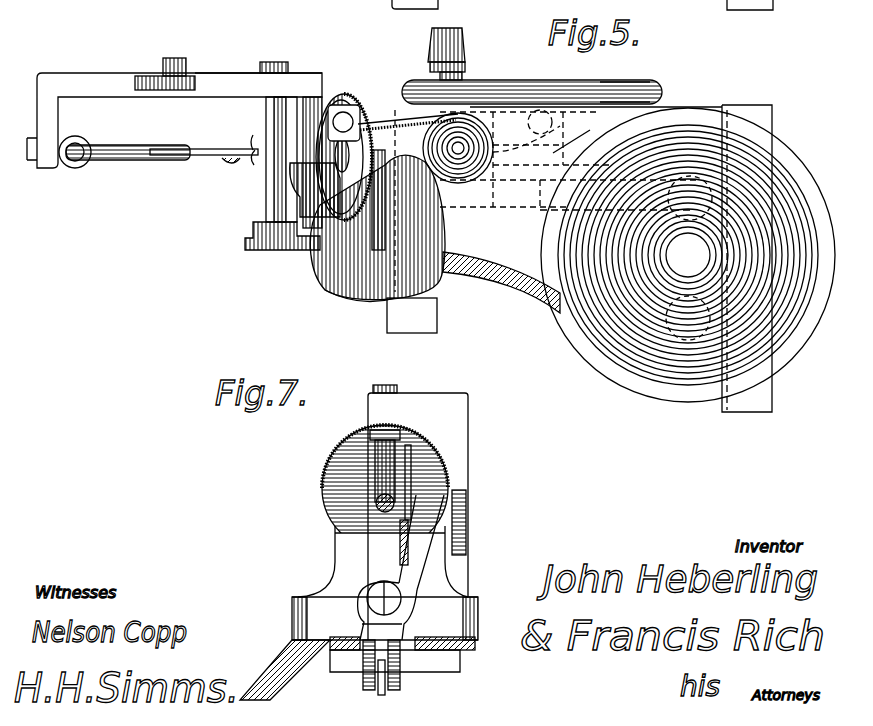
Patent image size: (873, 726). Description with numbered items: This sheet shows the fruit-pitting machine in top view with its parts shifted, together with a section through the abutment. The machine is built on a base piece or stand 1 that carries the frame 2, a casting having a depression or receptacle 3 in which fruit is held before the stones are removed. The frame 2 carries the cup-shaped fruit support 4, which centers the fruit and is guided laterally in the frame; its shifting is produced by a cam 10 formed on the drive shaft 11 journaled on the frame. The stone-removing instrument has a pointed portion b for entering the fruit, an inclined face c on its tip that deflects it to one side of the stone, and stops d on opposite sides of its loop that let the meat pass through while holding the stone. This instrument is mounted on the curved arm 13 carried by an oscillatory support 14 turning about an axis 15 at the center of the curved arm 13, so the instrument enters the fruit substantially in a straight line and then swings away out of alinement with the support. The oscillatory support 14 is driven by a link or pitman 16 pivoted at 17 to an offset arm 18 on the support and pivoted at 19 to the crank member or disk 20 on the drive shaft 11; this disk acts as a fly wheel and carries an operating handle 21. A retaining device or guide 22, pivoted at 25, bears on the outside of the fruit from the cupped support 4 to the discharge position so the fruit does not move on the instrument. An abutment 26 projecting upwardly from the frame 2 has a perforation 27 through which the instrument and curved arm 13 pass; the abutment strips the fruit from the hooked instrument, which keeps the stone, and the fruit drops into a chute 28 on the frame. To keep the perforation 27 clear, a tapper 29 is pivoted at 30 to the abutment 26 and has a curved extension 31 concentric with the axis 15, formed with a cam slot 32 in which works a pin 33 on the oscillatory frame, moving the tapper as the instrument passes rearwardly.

In FIG. 5, the base piece or stand 1 is at (490, 274).
In FIG. 5, the frame 2 is at (558, 199).
In FIG. 7, the frame 2 is at (478, 642).
In FIG. 5, the depression or receptacle 3 is at (752, 160).
In FIG. 5, the fruit support 4 is at (470, 132).
In FIG. 5, the cam 10 is at (632, 82).
In FIG. 5, the drive shaft 11 is at (583, 134).
In FIG. 5, the curved arm 13 is at (120, 148).
In FIG. 7, the curved arm 13 is at (365, 472).
In FIG. 5, the oscillatory support 14 is at (74, 82).
In FIG. 7, the oscillatory support 14 is at (458, 420).
In FIG. 5, the axis 15 is at (268, 200).
In FIG. 5, the link or pitman 16 is at (222, 78).
In FIG. 5, the pivot 17 is at (172, 62).
In FIG. 5, the offset arm 18 is at (145, 76).
In FIG. 7, the offset arm 18 is at (466, 524).
In FIG. 5, the pivot 19 is at (466, 75).
In FIG. 5, the crank member or disk 20 is at (552, 84).
In FIG. 5, the operating handle 21 is at (462, 48).
In FIG. 5, the retaining device or guide 22 is at (408, 133).
In FIG. 7, the retaining device or guide 22 is at (400, 540).
In FIG. 5, the pivot 25 is at (346, 112).
In FIG. 7, the pivot 25 is at (398, 428).
In FIG. 5, the abutment 26 is at (360, 195).
In FIG. 7, the abutment 26 is at (335, 508).
In FIG. 5, the perforation 27 is at (352, 157).
In FIG. 7, the perforation 27 is at (414, 452).
In FIG. 5, the chute 28 is at (366, 298).
In FIG. 7, the chute 28 is at (282, 678).
In FIG. 7, the tapper 29 is at (437, 492).
In FIG. 7, the pivot 30 is at (398, 603).
In FIG. 5, the curved extension 31 is at (315, 190).
In FIG. 7, the curved extension 31 is at (398, 672).
In FIG. 7, the cam slot 32 is at (368, 655).
In FIG. 7, the pin 33 is at (382, 695).
In FIG. 5, the pointed portion b is at (246, 168).
In FIG. 5, the inclined face c is at (248, 131).
In FIG. 5, the stops d is at (230, 165).